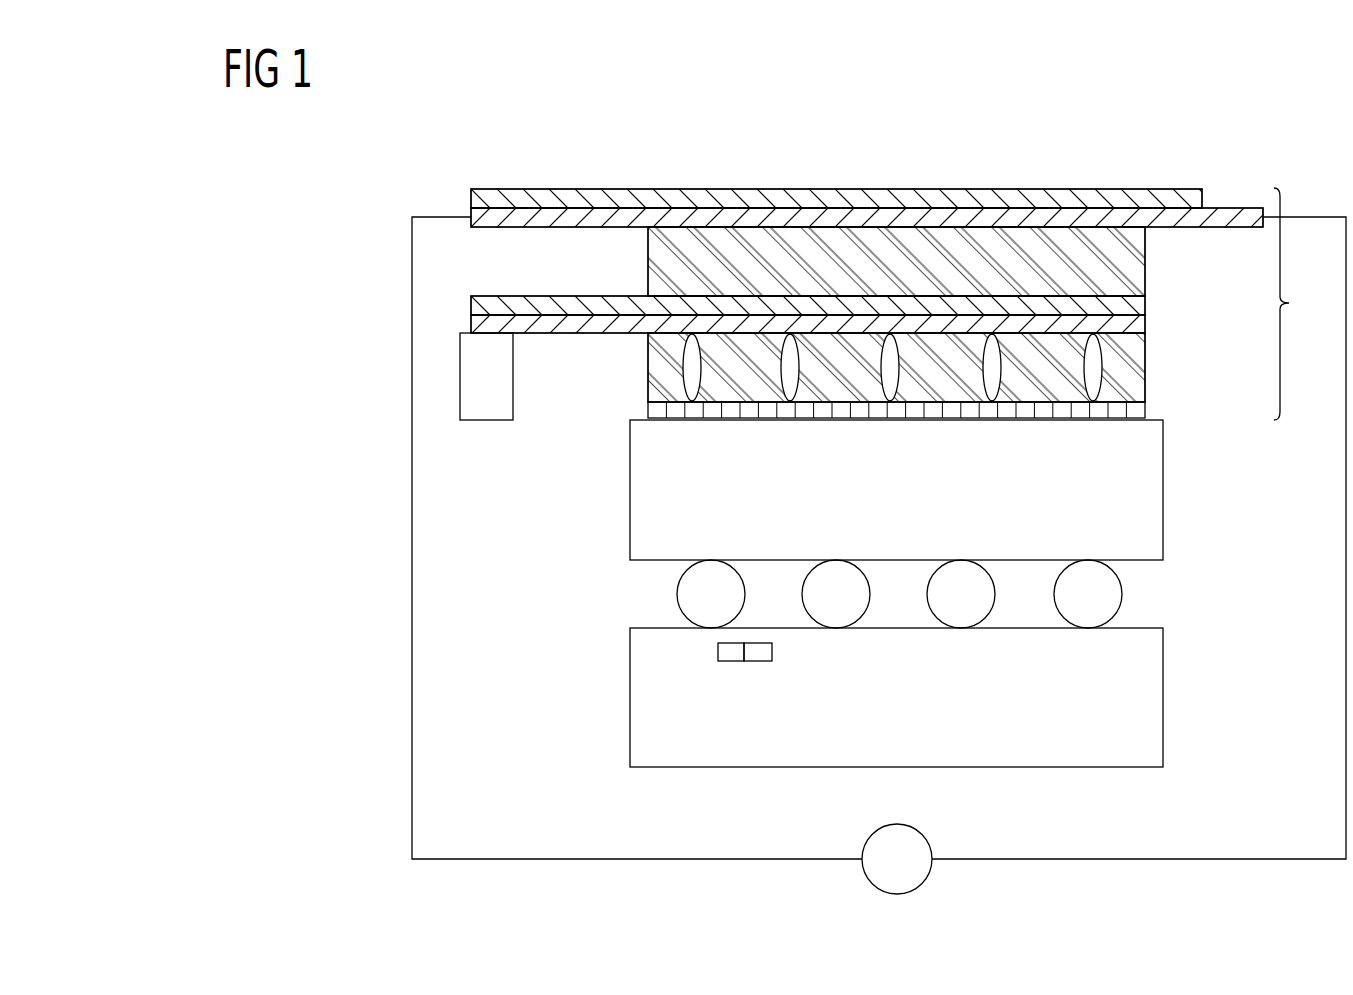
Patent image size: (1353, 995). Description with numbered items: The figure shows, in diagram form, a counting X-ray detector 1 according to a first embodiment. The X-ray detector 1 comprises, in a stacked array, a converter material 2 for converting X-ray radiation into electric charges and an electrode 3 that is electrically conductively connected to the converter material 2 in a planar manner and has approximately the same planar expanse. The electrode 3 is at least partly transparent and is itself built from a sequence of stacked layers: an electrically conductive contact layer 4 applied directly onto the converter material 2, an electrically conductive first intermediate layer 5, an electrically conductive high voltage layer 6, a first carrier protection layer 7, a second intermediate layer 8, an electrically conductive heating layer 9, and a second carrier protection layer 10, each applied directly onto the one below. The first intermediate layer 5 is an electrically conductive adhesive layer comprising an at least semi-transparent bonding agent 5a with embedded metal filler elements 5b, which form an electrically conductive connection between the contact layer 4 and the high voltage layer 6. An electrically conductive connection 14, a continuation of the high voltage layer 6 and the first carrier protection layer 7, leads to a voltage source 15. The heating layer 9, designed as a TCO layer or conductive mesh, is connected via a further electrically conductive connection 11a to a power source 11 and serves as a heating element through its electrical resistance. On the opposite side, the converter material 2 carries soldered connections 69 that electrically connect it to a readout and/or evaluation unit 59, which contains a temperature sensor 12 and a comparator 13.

The X-ray detector 1 is at (388, 265).
The converter material 2 is at (1150, 478).
The electrode 3 is at (1293, 304).
The contact layer 4 is at (1132, 408).
The first intermediate layer 5 is at (1132, 360).
The bonding agent 5a is at (893, 243).
The filler element 5b is at (789, 395).
The high voltage layer 6 is at (1132, 325).
The first carrier protection layer 7 is at (1137, 303).
The second intermediate layer 8 is at (1132, 253).
The heating layer 9 is at (1232, 218).
The second carrier protection layer 10 is at (1137, 200).
The power source 11 is at (898, 880).
The further electrically conductive connection 11a is at (412, 700).
The temperature sensor 12 is at (733, 650).
The comparator 13 is at (757, 650).
The electrically conductive connection 14 is at (563, 295).
The voltage source 15 is at (487, 403).
The readout and/or evaluation unit 59 is at (1164, 697).
The soldered connections 69 is at (1103, 610).